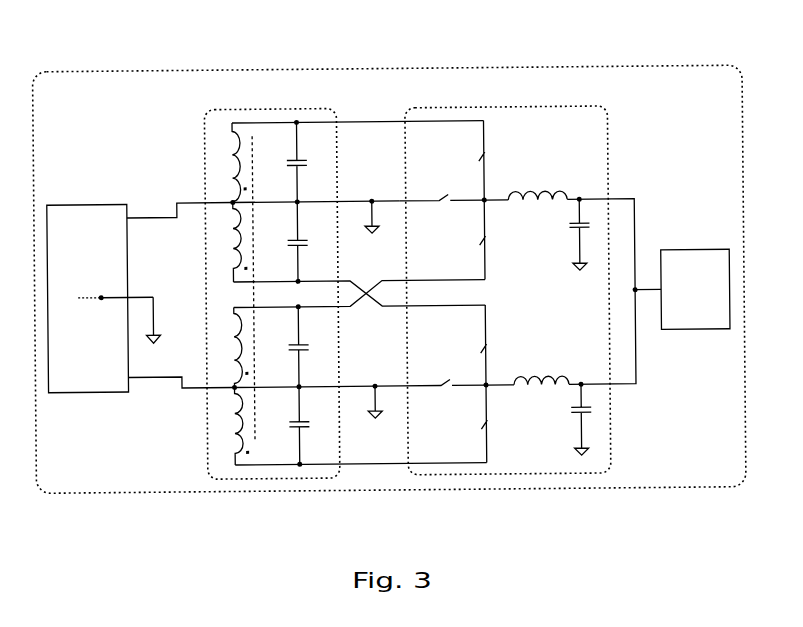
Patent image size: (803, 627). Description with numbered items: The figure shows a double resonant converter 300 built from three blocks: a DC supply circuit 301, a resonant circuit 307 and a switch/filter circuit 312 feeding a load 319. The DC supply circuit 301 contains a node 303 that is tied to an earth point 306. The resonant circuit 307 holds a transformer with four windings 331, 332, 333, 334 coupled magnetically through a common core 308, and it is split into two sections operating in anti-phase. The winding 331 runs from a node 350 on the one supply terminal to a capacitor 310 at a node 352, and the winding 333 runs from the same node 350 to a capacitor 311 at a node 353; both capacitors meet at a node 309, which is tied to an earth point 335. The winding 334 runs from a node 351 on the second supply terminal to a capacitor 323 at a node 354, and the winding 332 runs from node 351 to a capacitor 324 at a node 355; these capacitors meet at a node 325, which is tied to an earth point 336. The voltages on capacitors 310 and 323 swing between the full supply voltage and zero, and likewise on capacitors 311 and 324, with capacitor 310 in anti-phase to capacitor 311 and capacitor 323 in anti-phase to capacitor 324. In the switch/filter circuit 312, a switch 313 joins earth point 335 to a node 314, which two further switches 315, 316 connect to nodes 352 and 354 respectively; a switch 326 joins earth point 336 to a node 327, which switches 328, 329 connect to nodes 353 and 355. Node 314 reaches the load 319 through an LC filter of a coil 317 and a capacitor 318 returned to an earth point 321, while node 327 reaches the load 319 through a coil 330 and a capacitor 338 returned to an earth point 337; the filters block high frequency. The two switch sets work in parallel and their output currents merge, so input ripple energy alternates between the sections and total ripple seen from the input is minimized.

The double resonant converter 300 is at (370, 68).
The DC supply circuit 301 is at (86, 189).
The node 303 is at (101, 295).
The earth point 306 is at (155, 340).
The resonant circuit 307 is at (254, 108).
The core 308 is at (268, 288).
The node 309 is at (297, 202).
The capacitor 310 is at (288, 161).
The capacitor 311 is at (290, 242).
The switch/filter circuit 312 is at (492, 108).
The switch 313 is at (443, 192).
The node 314 is at (485, 201).
The switch 315 is at (487, 158).
The switch 316 is at (488, 240).
The coil 317 is at (528, 192).
The capacitor 318 is at (569, 229).
The load 319 is at (697, 241).
The earth point 321 is at (579, 270).
The capacitor 323 is at (290, 346).
The capacitor 324 is at (290, 424).
The node 325 is at (298, 387).
The switch 326 is at (445, 379).
The node 327 is at (485, 388).
The switch 328 is at (488, 346).
The switch 329 is at (489, 423).
The coil 330 is at (530, 378).
The winding 331 is at (234, 161).
The winding 332 is at (237, 426).
The winding 333 is at (237, 238).
The winding 334 is at (237, 343).
The earth point 335 is at (373, 233).
The earth point 336 is at (377, 418).
The earth point 337 is at (579, 454).
The capacitor 338 is at (571, 411).
The node 350 is at (233, 201).
The node 351 is at (233, 386).
The node 352 is at (299, 122).
The node 353 is at (298, 280).
The node 354 is at (299, 306).
The node 355 is at (299, 463).